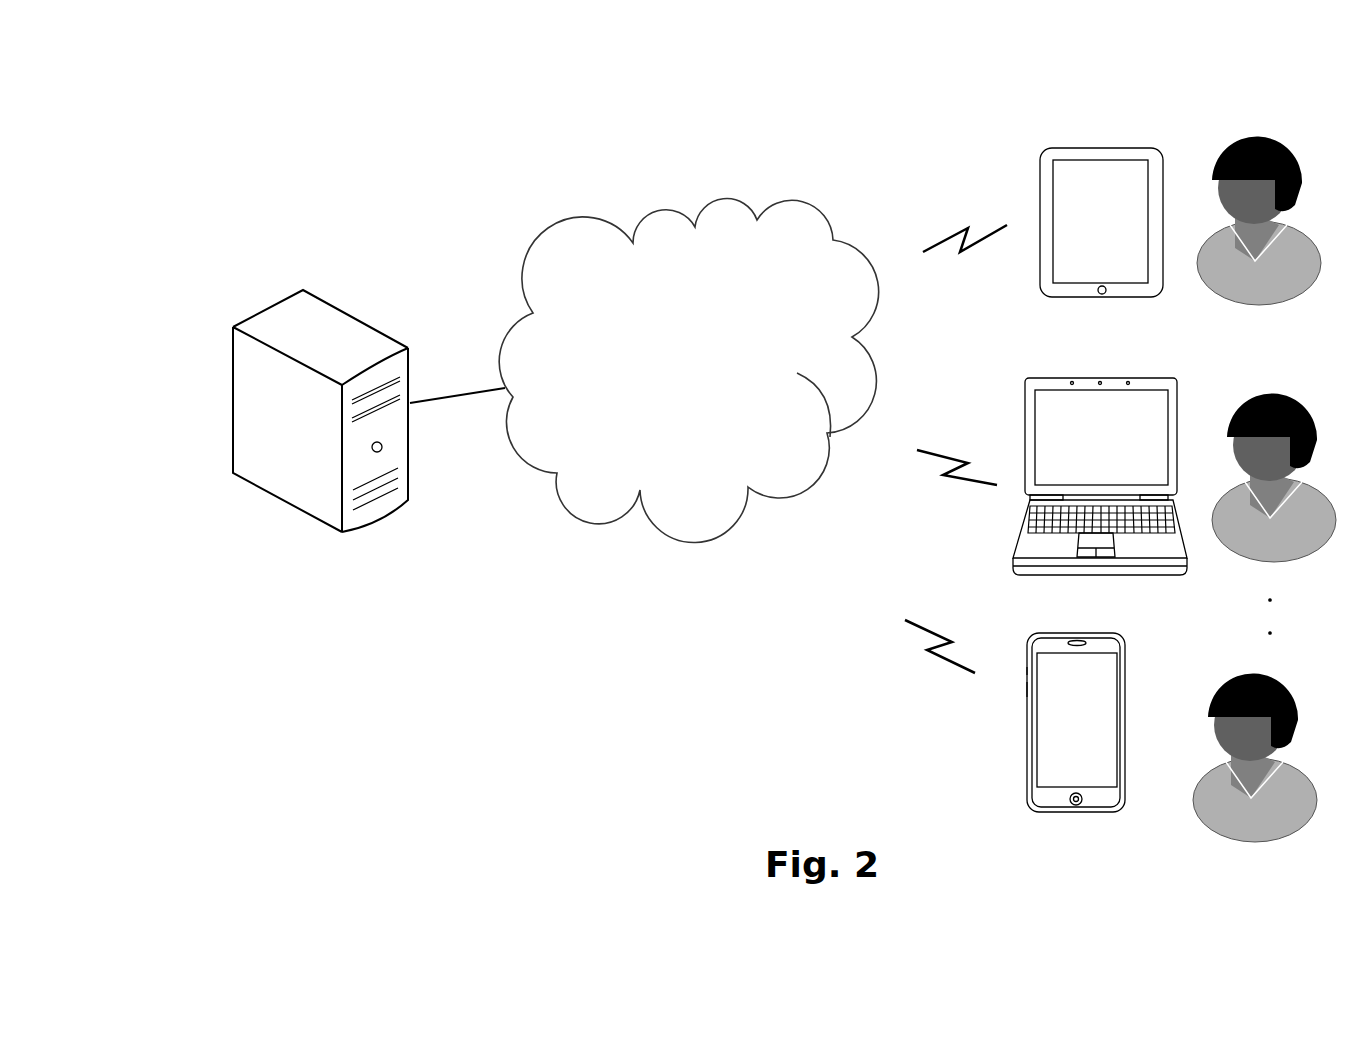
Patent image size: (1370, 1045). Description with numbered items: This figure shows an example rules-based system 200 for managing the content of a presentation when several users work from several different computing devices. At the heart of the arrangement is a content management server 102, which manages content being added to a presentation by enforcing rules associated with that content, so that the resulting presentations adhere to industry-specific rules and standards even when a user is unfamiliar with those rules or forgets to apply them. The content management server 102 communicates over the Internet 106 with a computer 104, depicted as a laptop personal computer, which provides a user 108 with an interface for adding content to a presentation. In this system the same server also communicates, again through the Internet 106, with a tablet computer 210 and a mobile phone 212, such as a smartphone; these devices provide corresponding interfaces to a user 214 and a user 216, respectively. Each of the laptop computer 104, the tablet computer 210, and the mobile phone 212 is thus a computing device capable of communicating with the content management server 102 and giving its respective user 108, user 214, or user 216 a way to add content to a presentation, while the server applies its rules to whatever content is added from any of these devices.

The system 200 is at (541, 139).
The content management server 102 is at (268, 305).
The Internet 106 is at (718, 190).
The tablet computer 210 is at (1133, 147).
The user 214 is at (1300, 180).
The computer 104 is at (1113, 577).
The user 108 is at (1315, 438).
The mobile phone 212 is at (1055, 813).
The user 216 is at (1305, 782).